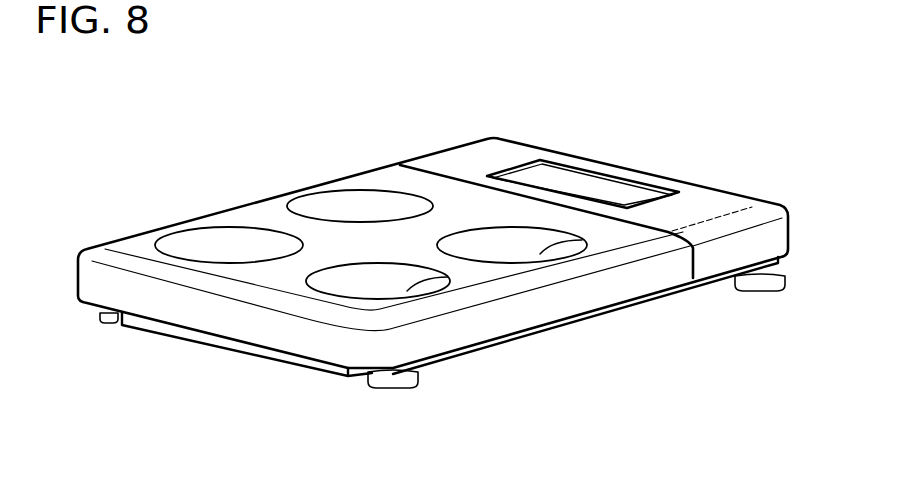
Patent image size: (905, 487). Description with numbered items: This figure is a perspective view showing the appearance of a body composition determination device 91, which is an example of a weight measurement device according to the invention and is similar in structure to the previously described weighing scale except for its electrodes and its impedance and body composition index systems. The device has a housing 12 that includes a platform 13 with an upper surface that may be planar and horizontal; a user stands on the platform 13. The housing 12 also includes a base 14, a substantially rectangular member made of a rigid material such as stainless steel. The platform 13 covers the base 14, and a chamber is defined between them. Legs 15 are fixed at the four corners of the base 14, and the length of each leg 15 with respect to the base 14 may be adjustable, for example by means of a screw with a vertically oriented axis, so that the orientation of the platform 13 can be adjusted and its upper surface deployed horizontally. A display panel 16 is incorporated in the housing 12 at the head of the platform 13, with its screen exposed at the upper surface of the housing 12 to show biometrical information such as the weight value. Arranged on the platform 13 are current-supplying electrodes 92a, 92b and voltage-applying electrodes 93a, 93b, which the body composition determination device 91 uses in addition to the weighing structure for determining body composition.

The body composition determination device 91 is at (337, 137).
The housing 12 is at (424, 155).
The platform 13 is at (142, 247).
The base 14 is at (207, 338).
The legs 15 is at (110, 316).
The display panel 16 is at (602, 183).
The current-supplying electrode 92a is at (310, 198).
The current-supplying electrode 92b is at (585, 247).
The voltage-applying electrode 93a is at (225, 240).
The voltage-applying electrode 93b is at (447, 277).